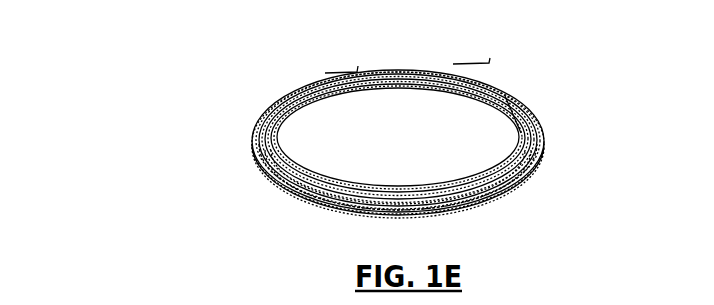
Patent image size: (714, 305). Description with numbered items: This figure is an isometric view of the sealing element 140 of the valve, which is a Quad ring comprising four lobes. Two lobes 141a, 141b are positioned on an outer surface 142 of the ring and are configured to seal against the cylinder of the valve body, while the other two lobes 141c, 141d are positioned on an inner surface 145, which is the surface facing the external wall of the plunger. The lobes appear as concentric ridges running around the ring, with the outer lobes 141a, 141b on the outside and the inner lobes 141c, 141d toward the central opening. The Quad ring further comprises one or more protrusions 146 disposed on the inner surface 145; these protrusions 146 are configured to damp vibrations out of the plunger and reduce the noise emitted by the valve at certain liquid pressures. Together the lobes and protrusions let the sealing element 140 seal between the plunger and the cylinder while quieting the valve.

The sealing element 140 is at (199, 122).
The lobe 141a is at (253, 160).
The lobe 141b is at (297, 197).
The lobe 141c is at (517, 110).
The lobe 141d is at (388, 97).
The outer surface 142 is at (503, 177).
The inner surface 145 is at (287, 117).
The protrusions 146 is at (327, 92).